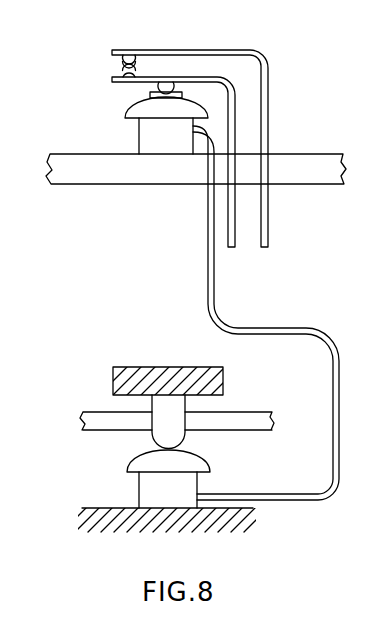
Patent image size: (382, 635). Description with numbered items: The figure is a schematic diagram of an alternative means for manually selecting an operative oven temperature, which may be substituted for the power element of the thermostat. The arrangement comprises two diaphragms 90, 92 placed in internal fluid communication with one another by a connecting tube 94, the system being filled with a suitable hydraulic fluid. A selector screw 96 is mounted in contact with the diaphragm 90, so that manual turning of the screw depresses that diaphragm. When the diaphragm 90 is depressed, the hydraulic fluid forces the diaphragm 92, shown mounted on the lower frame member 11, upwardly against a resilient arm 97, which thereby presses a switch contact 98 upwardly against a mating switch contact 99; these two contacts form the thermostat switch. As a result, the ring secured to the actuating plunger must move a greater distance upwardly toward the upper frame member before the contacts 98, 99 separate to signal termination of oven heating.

The lower frame member 11 is at (312, 153).
The diaphragm 90 is at (147, 487).
The diaphragm 92 is at (139, 135).
The connecting tube 94 is at (287, 327).
The selector screw 96 is at (148, 367).
The resilient arm 97 is at (203, 77).
The switch contact 98 is at (123, 72).
The mating switch contact 99 is at (123, 62).